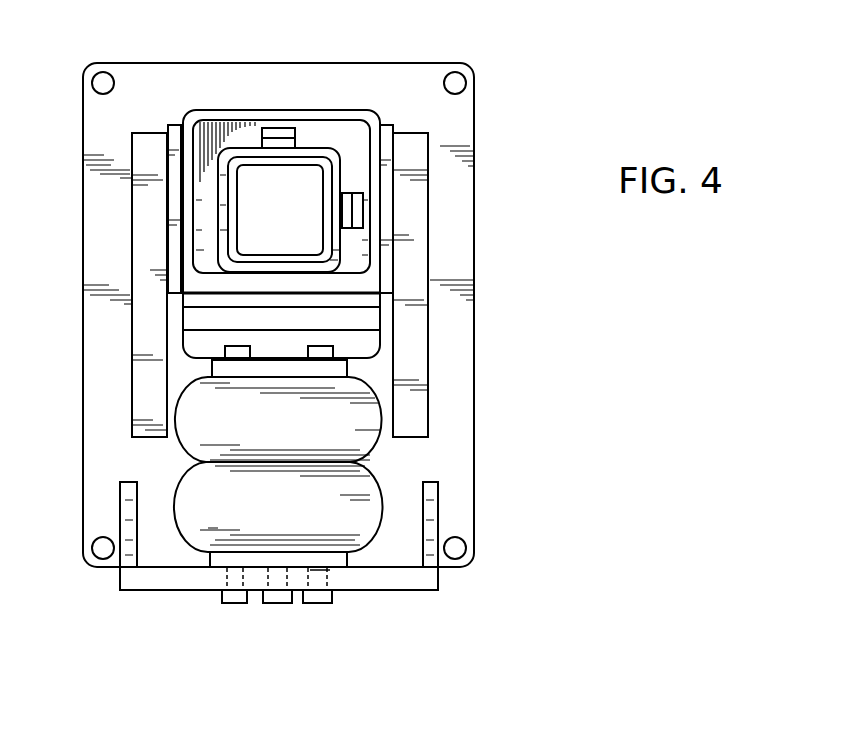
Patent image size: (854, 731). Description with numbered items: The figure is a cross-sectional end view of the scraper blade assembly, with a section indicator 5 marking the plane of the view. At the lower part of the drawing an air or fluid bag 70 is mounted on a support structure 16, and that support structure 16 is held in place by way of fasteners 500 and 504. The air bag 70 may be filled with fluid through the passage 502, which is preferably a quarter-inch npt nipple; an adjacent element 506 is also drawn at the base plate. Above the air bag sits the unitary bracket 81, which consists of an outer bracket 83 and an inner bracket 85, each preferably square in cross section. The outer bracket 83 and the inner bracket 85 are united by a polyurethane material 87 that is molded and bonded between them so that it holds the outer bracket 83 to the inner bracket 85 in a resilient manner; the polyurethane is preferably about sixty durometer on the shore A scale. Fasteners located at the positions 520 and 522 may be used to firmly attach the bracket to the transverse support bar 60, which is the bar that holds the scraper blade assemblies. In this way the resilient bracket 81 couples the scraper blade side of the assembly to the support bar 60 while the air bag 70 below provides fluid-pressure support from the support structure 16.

The section line 5- 5 is at (318, 22).
The support structure 16 is at (440, 583).
The transverse support bar 60 is at (296, 219).
The air or fluid bag 70 is at (388, 476).
The unitary bracket 81 is at (208, 110).
The outer bracket 83 is at (182, 183).
The inner bracket 85 is at (218, 270).
The polyurethane material 87 is at (205, 243).
The fastener 500 is at (225, 352).
The passage 502 is at (268, 603).
The fastener 504 is at (345, 352).
The fastener 506 is at (328, 580).
The fastener location 520 is at (299, 126).
The fastener location 522 is at (364, 212).